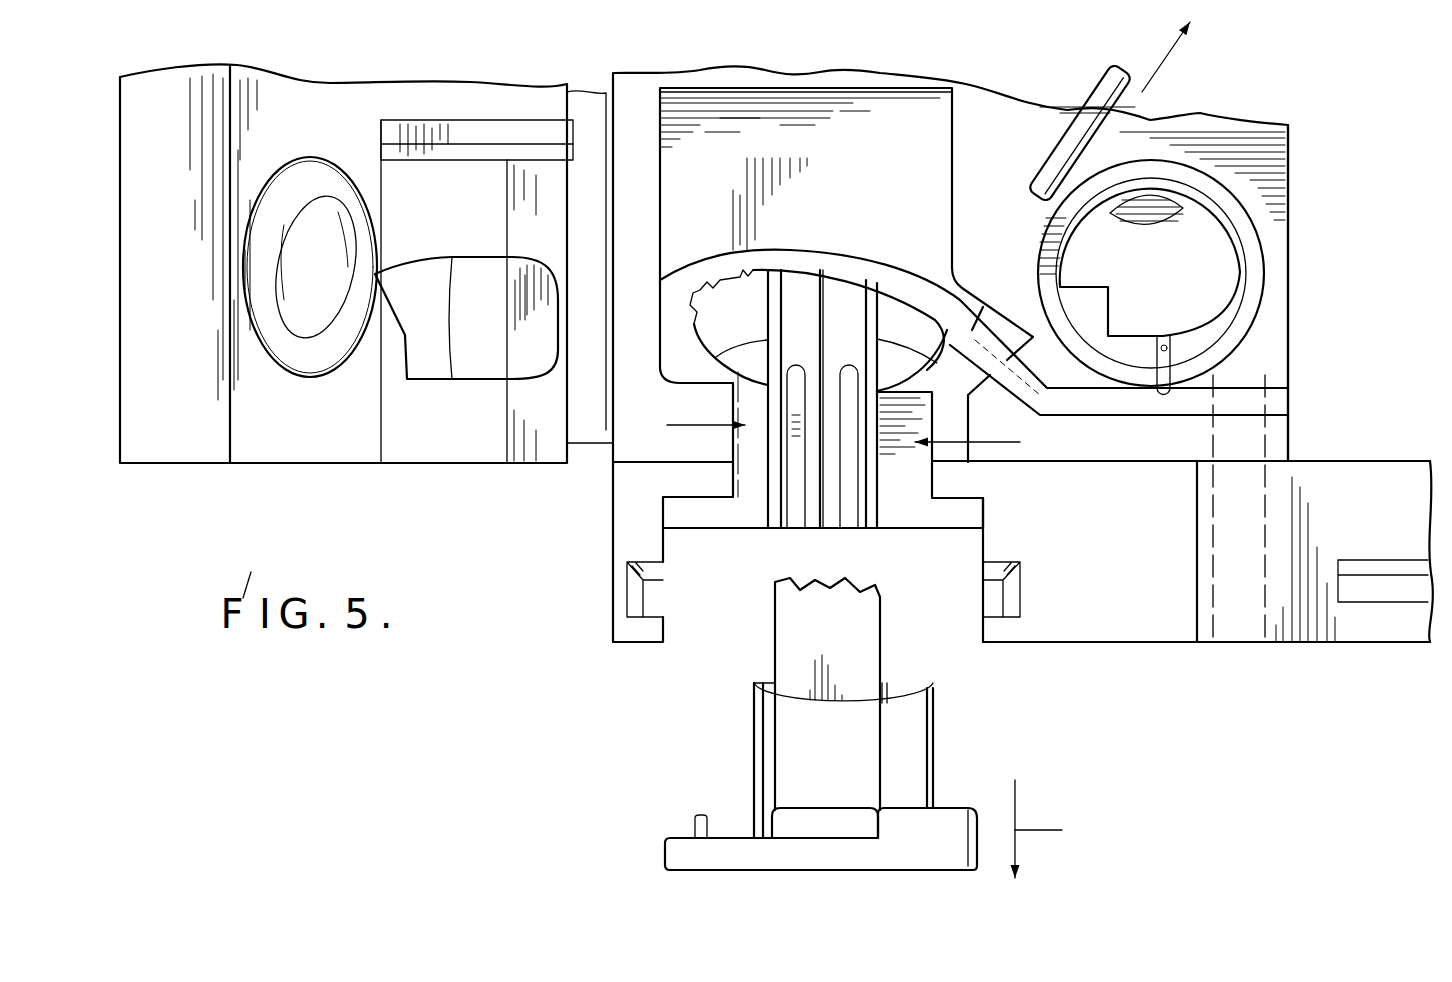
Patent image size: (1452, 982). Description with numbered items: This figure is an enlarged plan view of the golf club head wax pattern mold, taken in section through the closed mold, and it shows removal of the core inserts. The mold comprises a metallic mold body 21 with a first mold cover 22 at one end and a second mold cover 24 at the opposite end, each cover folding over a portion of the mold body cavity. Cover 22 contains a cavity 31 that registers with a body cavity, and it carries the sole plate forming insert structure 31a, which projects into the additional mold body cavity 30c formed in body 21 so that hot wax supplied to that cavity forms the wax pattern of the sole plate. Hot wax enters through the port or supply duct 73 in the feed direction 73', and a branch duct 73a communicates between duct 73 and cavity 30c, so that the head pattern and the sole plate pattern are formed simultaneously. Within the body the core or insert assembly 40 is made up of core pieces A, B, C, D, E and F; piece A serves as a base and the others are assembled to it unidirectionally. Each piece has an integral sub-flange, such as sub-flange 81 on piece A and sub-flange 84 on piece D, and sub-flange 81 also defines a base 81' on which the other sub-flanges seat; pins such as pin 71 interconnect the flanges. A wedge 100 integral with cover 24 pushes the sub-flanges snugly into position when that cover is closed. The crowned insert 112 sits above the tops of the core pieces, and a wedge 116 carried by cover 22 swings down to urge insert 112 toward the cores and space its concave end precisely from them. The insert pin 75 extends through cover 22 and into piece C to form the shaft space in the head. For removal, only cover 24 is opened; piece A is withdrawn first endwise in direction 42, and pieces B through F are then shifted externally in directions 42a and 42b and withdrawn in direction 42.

The first mold cover 22 is at (283, 465).
The wedge 116 is at (459, 128).
The insert structure 31a is at (303, 252).
The cavity 31 is at (437, 358).
The crowned insert 112 is at (849, 158).
The core or insert assembly 40 is at (932, 319).
The port 73 is at (1119, 384).
The feed direction arrow 73' is at (1335, 412).
The branch duct 73a is at (1170, 350).
The additional mold body cavity 30c is at (1151, 273).
The insert pin 75 is at (1100, 87).
The mold body 21 is at (1292, 138).
The second mold cover 24 is at (1247, 645).
The wedge 100 is at (1405, 590).
The shifting direction 42a is at (677, 428).
The shifting direction 42b is at (1002, 443).
The removal direction arrow 42 is at (1061, 829).
The sub-flange 81 is at (861, 795).
The base 81' is at (610, 848).
The sub-flange 84 is at (817, 818).
The pin 71 is at (690, 820).
The core piece A is at (932, 719).
The core piece B is at (733, 477).
The core piece C is at (935, 478).
The core piece D is at (808, 632).
The core piece E is at (801, 290).
The core piece F is at (848, 292).